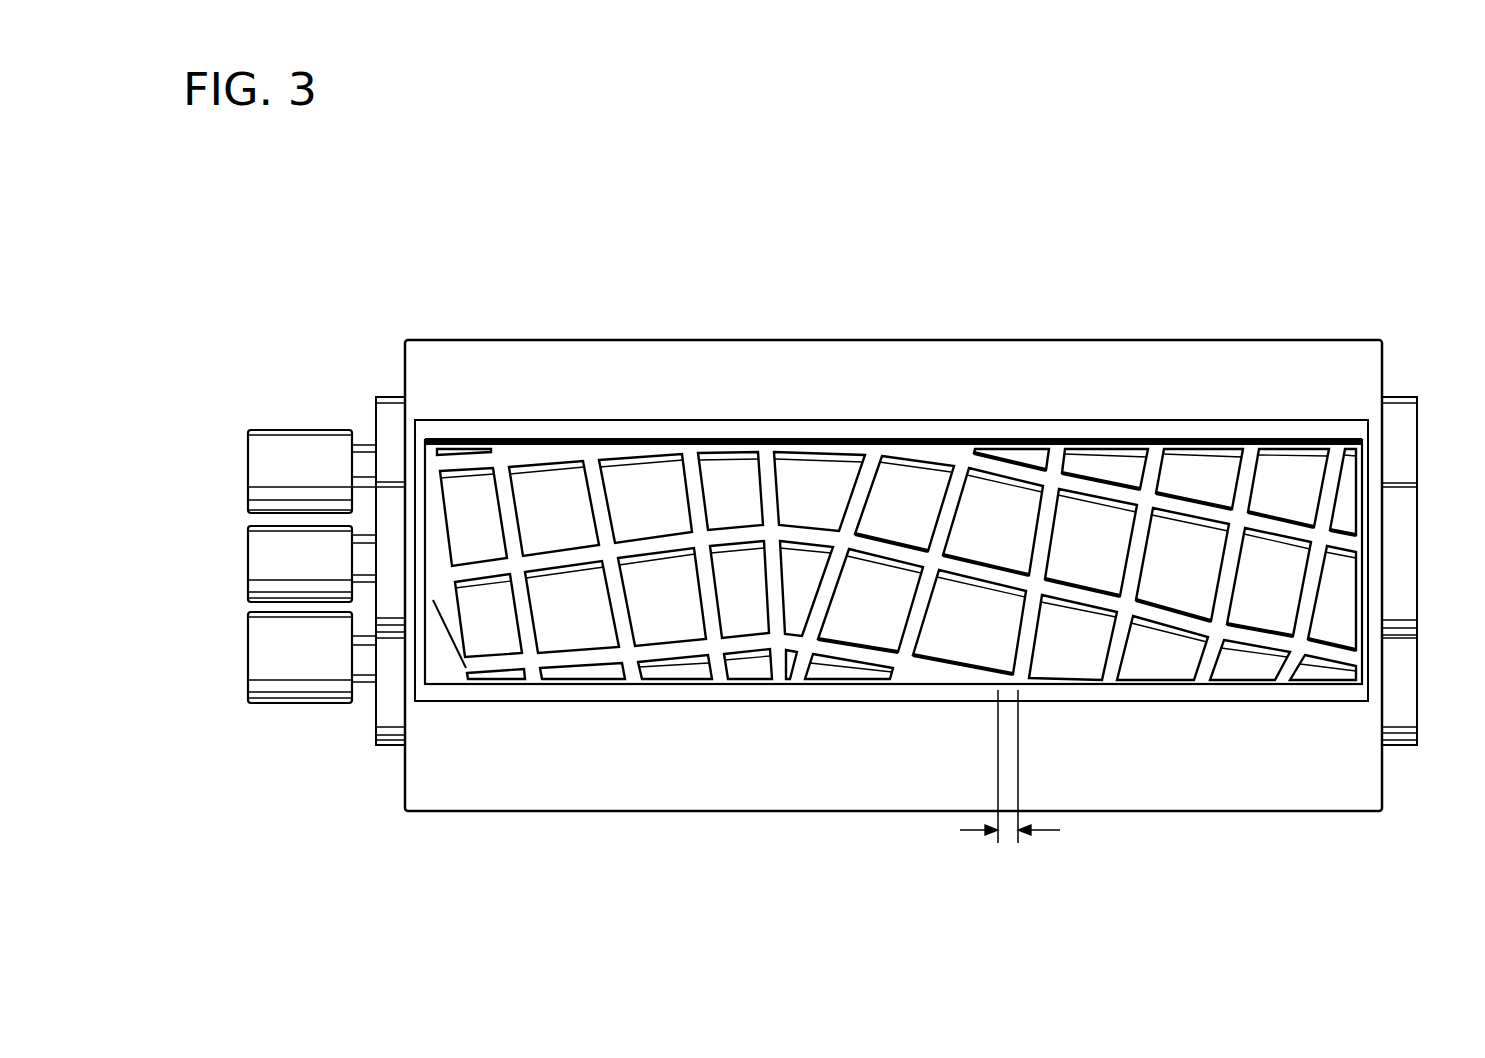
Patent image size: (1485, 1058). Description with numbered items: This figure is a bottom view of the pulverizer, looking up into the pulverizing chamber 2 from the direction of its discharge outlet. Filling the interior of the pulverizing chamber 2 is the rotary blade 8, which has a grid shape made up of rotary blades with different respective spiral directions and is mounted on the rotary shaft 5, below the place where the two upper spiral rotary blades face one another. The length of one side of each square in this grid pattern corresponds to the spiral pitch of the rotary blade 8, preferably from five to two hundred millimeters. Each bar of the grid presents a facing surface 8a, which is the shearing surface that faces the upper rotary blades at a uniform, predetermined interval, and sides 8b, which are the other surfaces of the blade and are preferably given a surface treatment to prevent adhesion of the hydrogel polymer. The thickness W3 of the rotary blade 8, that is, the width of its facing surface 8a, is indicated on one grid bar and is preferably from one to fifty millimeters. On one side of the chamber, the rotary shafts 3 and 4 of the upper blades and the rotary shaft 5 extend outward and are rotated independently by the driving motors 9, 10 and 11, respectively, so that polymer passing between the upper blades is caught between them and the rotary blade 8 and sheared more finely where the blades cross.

The pulverizing chamber 2 is at (1274, 340).
The rotary shaft 3 is at (380, 412).
The rotary shaft 4 is at (385, 733).
The rotary shaft 5 is at (1405, 552).
The rotary blade 8 is at (891, 645).
The facing surface 8a is at (793, 681).
The side 8b is at (856, 657).
The driving motor 9 is at (278, 437).
The driving motor 10 is at (258, 691).
The driving motor 11 is at (262, 565).
The thickness of the rotary blade W3 is at (1010, 794).